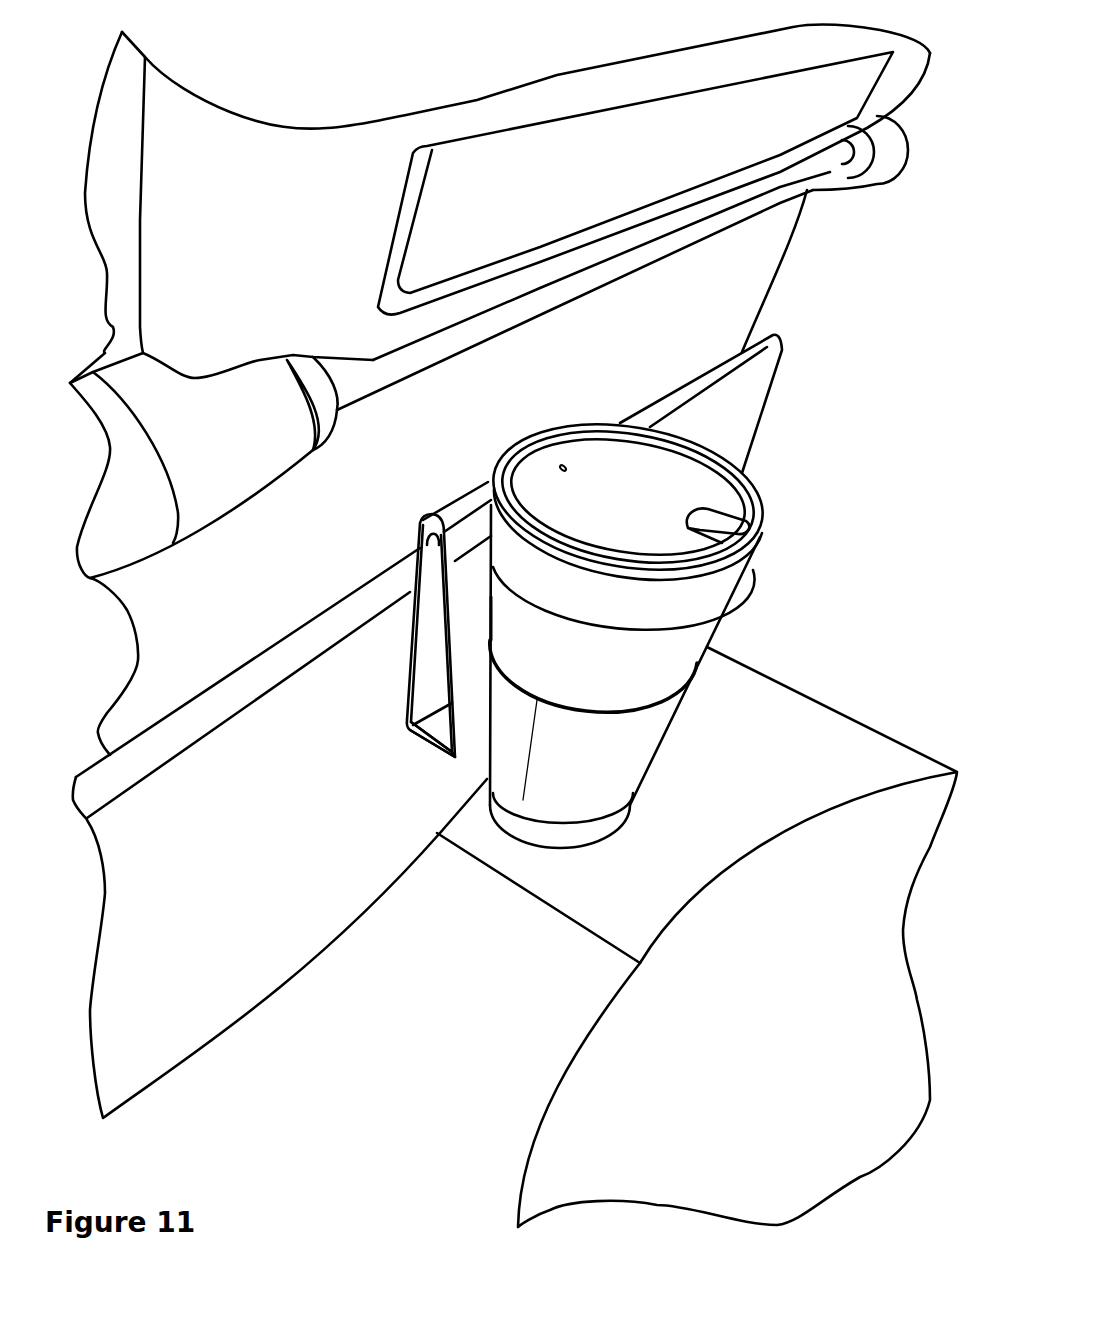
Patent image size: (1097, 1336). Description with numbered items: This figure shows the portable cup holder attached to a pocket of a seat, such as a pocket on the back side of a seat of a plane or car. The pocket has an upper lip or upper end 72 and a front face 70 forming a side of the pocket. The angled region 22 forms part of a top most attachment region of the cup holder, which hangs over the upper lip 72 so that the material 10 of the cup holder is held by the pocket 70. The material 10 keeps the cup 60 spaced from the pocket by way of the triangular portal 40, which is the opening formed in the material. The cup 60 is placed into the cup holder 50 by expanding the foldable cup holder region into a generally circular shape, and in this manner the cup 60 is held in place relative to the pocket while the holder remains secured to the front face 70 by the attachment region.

The material 10 is at (413, 690).
The angled region 22 is at (458, 505).
The triangular portal 40 is at (442, 685).
The cup holder 50 is at (643, 743).
The cup 60 is at (690, 527).
The front face 70 is at (150, 873).
The upper lip 72 is at (285, 626).